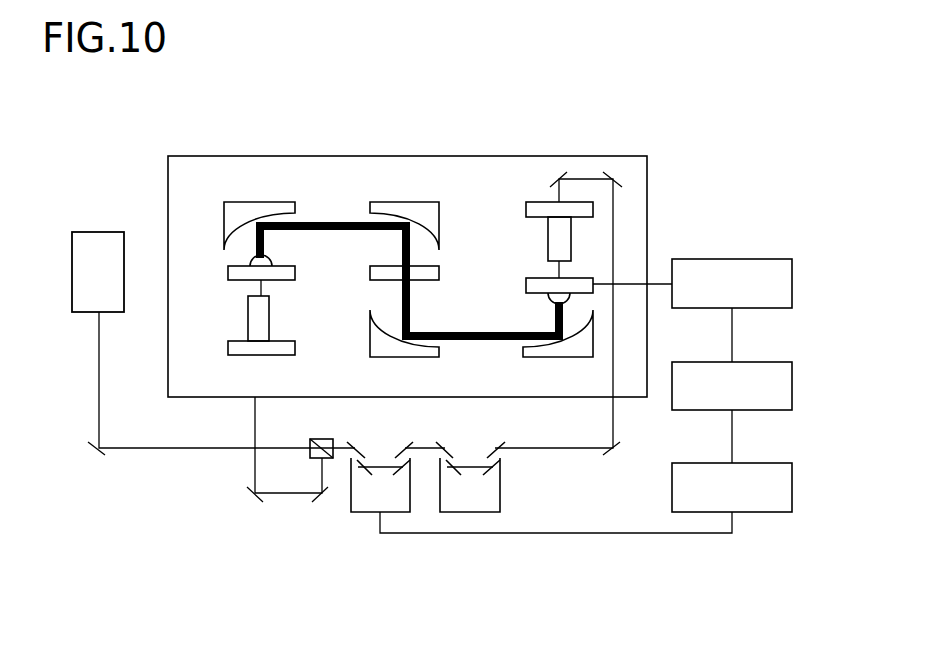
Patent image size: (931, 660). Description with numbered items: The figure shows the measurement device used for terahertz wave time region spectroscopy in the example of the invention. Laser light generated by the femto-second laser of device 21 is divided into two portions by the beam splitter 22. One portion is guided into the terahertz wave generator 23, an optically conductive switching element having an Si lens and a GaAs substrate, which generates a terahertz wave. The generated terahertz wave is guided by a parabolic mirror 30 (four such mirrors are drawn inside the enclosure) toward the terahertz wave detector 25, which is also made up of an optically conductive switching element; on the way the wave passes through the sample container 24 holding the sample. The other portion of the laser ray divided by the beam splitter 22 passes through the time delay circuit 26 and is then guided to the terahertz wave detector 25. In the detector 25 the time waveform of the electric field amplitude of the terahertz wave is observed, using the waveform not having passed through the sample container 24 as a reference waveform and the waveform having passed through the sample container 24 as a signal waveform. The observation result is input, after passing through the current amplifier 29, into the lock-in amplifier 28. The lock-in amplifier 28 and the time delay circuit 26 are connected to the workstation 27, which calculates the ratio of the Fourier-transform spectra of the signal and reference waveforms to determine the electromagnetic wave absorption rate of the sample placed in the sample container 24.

The femto-second laser device 21 is at (99, 232).
The beam splitter 22 is at (310, 440).
The terahertz wave generator 23 is at (228, 268).
The sample container 24 is at (440, 268).
The terahertz wave detector 25 is at (578, 278).
The time delay circuit 26 is at (500, 484).
The workstation 27 is at (793, 493).
The lock-in amplifier 28 is at (793, 390).
The current amplifier 29 is at (793, 285).
The parabolic mirror 30 is at (250, 202).